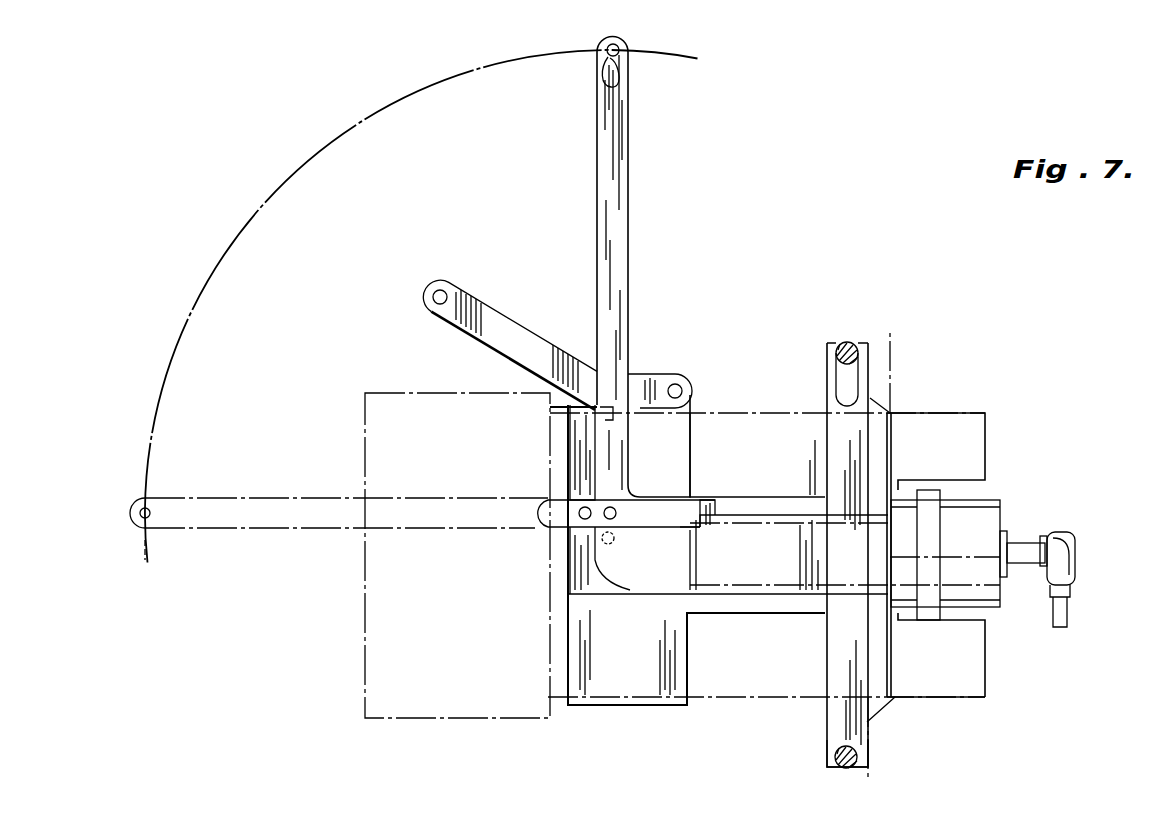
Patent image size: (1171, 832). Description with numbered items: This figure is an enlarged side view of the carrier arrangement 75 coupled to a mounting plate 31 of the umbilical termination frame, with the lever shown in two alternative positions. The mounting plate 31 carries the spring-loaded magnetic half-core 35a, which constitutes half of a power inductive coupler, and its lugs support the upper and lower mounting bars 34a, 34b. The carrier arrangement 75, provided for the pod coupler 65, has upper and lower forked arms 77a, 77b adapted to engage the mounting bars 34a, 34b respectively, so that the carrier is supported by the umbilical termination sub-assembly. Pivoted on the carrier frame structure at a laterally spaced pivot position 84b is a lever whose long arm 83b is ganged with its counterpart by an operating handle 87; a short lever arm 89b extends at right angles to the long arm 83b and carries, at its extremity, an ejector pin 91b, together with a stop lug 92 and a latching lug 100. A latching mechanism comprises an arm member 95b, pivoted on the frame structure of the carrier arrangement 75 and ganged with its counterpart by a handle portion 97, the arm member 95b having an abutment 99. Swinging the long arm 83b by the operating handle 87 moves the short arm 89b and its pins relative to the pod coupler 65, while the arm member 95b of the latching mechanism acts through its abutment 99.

The mounting plate 31 is at (985, 420).
The upper mounting bar 34a is at (850, 345).
The lower mounting bar 34b is at (875, 760).
The magnetic half-core 35a is at (997, 502).
The pod coupler 65 is at (358, 604).
The carrier arrangement 75 is at (622, 720).
The upper forked arm 77a is at (826, 352).
The lower forked arm 77b is at (830, 752).
The long lever arm 83b is at (623, 205).
The pivot position 84b is at (612, 507).
The operating handle 87 is at (617, 91).
The short lever arm 89b is at (560, 503).
The ejector pin 91b is at (598, 542).
The stop lug 92 is at (693, 527).
The arm member 95b is at (485, 302).
The handle portion 97 is at (440, 290).
The abutment 99 is at (622, 392).
The latching lug 100 is at (713, 503).